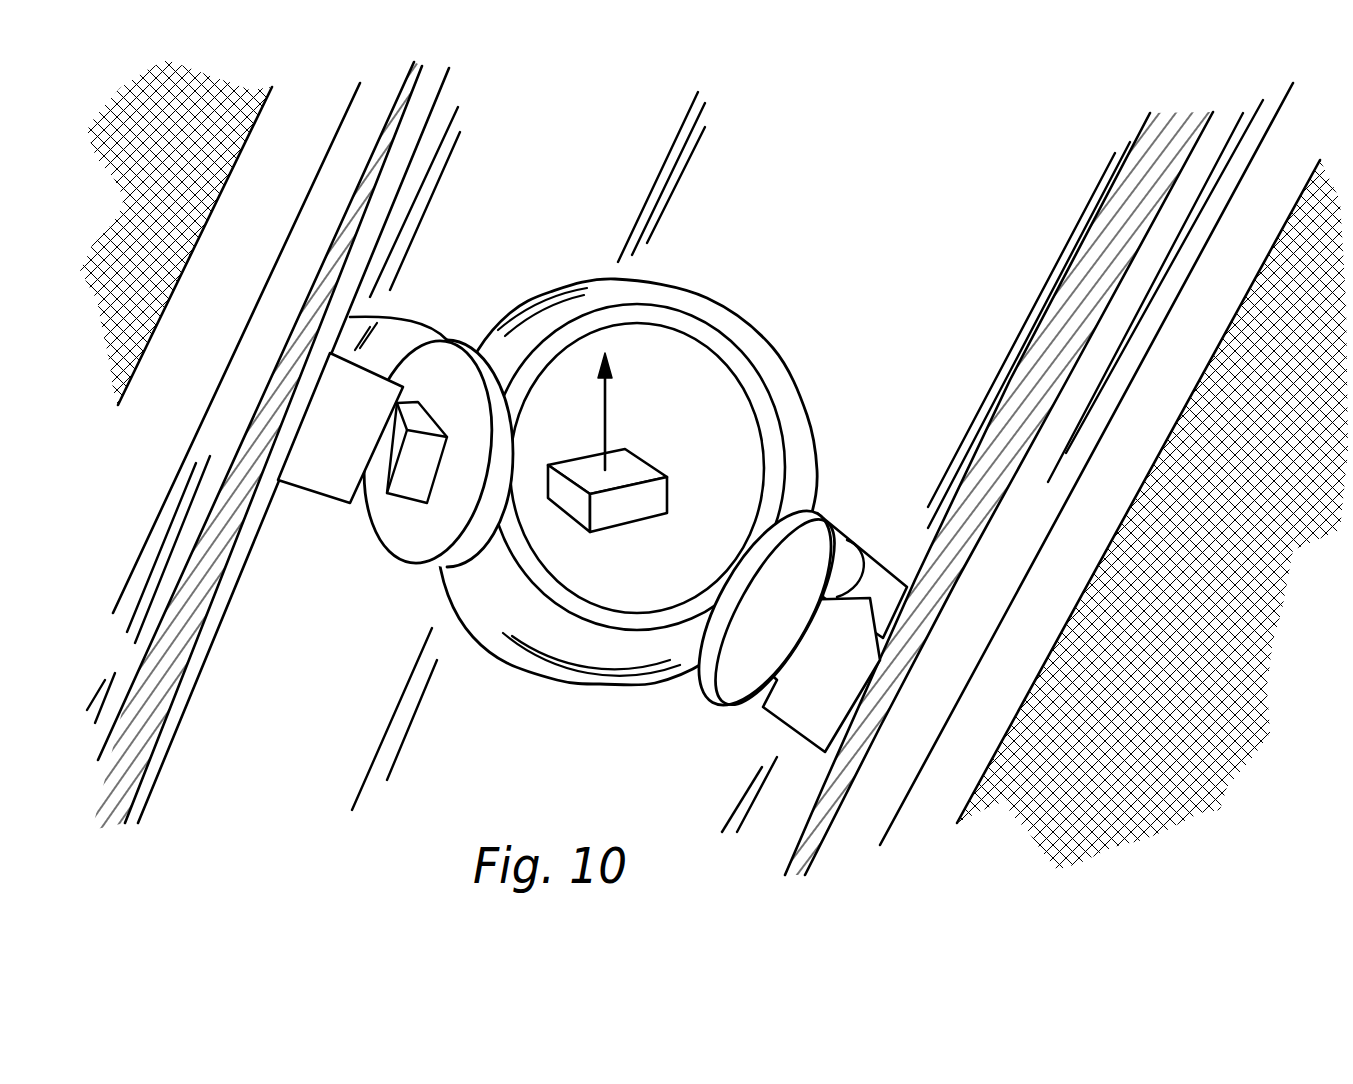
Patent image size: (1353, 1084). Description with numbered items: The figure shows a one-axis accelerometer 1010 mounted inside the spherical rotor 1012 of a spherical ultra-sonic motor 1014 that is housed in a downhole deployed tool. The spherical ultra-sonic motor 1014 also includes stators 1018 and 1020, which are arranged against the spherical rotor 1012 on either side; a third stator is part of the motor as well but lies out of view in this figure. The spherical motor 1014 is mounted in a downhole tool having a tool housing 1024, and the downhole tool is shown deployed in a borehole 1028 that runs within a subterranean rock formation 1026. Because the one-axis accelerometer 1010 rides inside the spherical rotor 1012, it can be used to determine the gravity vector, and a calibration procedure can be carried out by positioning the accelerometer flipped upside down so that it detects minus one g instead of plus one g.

The 1-axis accelerometer 1010 is at (643, 507).
The spherical rotor 1012 is at (680, 305).
The spherical ultra-sonic motor 1014 is at (594, 498).
The stator 1018 is at (725, 690).
The stator 1020 is at (440, 537).
The tool housing 1024 is at (222, 547).
The subterranean rock formation 1026 is at (195, 170).
The borehole 1028 is at (218, 360).